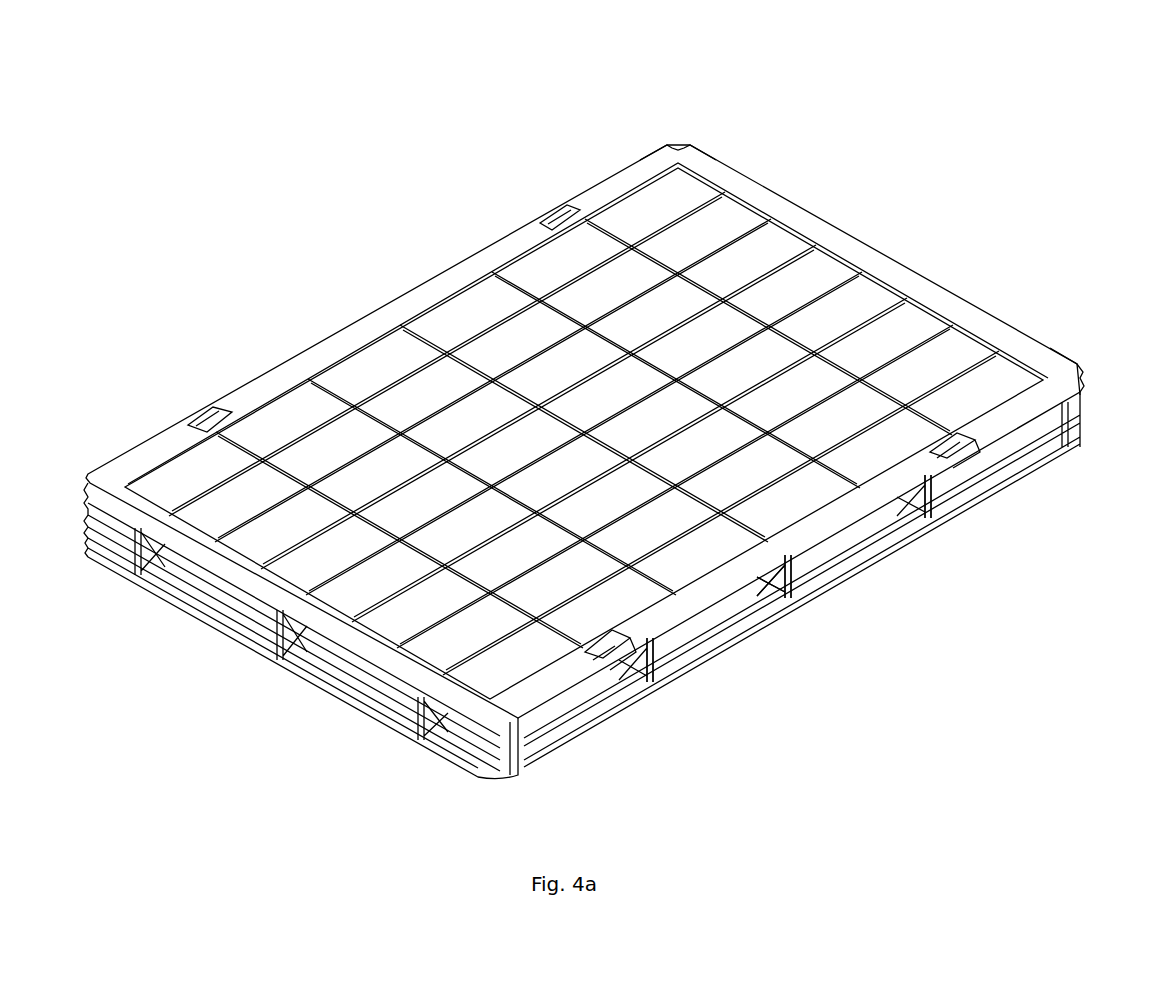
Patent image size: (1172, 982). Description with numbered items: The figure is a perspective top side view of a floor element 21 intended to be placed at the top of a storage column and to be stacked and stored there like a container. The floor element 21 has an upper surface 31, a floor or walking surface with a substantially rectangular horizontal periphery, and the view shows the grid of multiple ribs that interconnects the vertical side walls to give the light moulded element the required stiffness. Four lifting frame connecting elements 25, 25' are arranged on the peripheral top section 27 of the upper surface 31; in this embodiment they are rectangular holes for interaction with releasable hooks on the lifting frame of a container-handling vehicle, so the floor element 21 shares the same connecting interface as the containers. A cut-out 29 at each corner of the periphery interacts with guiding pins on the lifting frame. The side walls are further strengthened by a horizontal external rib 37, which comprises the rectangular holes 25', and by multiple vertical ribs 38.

The floor element 21 is at (930, 235).
The lifting frame connecting element 25 is at (577, 428).
The lifting frame connecting element 25' is at (967, 560).
The peripheral top section 27 is at (412, 300).
The cut-out 29 is at (679, 147).
The upper surface 31 is at (606, 407).
The horizontal external rib 37 is at (828, 550).
The vertical rib 38 is at (785, 565).